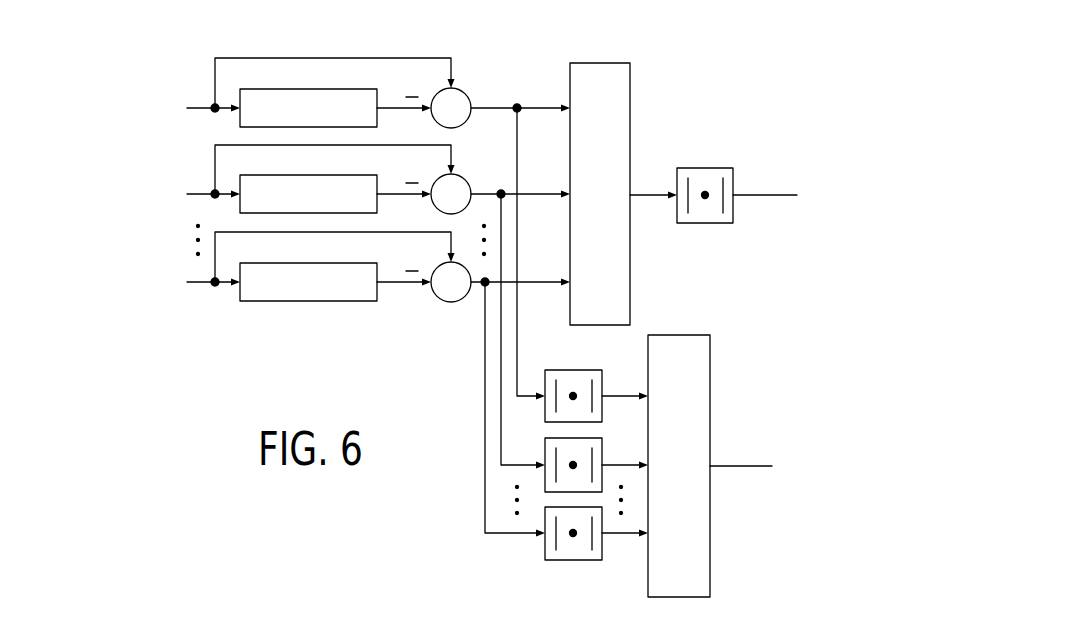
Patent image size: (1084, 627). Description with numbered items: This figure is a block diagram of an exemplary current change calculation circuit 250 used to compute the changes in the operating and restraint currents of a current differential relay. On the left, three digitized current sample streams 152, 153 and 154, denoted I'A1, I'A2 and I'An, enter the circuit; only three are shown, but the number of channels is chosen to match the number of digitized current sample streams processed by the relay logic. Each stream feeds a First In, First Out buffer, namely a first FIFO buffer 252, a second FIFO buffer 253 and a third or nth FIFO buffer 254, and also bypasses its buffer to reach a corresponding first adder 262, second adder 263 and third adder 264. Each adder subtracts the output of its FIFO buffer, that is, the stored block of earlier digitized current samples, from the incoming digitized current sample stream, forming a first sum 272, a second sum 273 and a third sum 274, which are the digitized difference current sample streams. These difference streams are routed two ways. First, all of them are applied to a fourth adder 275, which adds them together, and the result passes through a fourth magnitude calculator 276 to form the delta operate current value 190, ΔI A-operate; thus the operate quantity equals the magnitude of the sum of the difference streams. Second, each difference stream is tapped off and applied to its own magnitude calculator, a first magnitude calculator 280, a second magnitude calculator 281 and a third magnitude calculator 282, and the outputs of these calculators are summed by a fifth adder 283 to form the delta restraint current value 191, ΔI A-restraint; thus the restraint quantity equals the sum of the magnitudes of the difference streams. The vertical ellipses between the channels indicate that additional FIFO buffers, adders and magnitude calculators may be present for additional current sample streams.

The current change calculation circuit 250 is at (788, 80).
The digitized current sample stream 152 is at (203, 112).
The digitized current sample stream 153 is at (203, 198).
The digitized current sample stream 154 is at (203, 286).
The first FIFO buffer 252 is at (310, 88).
The second FIFO buffer 253 is at (310, 174).
The third FIFO buffer 254 is at (310, 262).
The first adder 262 is at (467, 94).
The second adder 263 is at (467, 180).
The third adder 264 is at (452, 303).
The first sum 272 is at (505, 104).
The second sum 273 is at (534, 198).
The third sum 274 is at (537, 284).
The fourth adder 275 is at (598, 63).
The fourth magnitude calculator 276 is at (705, 167).
The delta operate current value 190 is at (763, 196).
The first magnitude calculator 280 is at (545, 412).
The second magnitude calculator 281 is at (545, 482).
The third magnitude calculator 282 is at (545, 550).
The fifth adder 283 is at (710, 369).
The delta restraint current value 191 is at (740, 467).